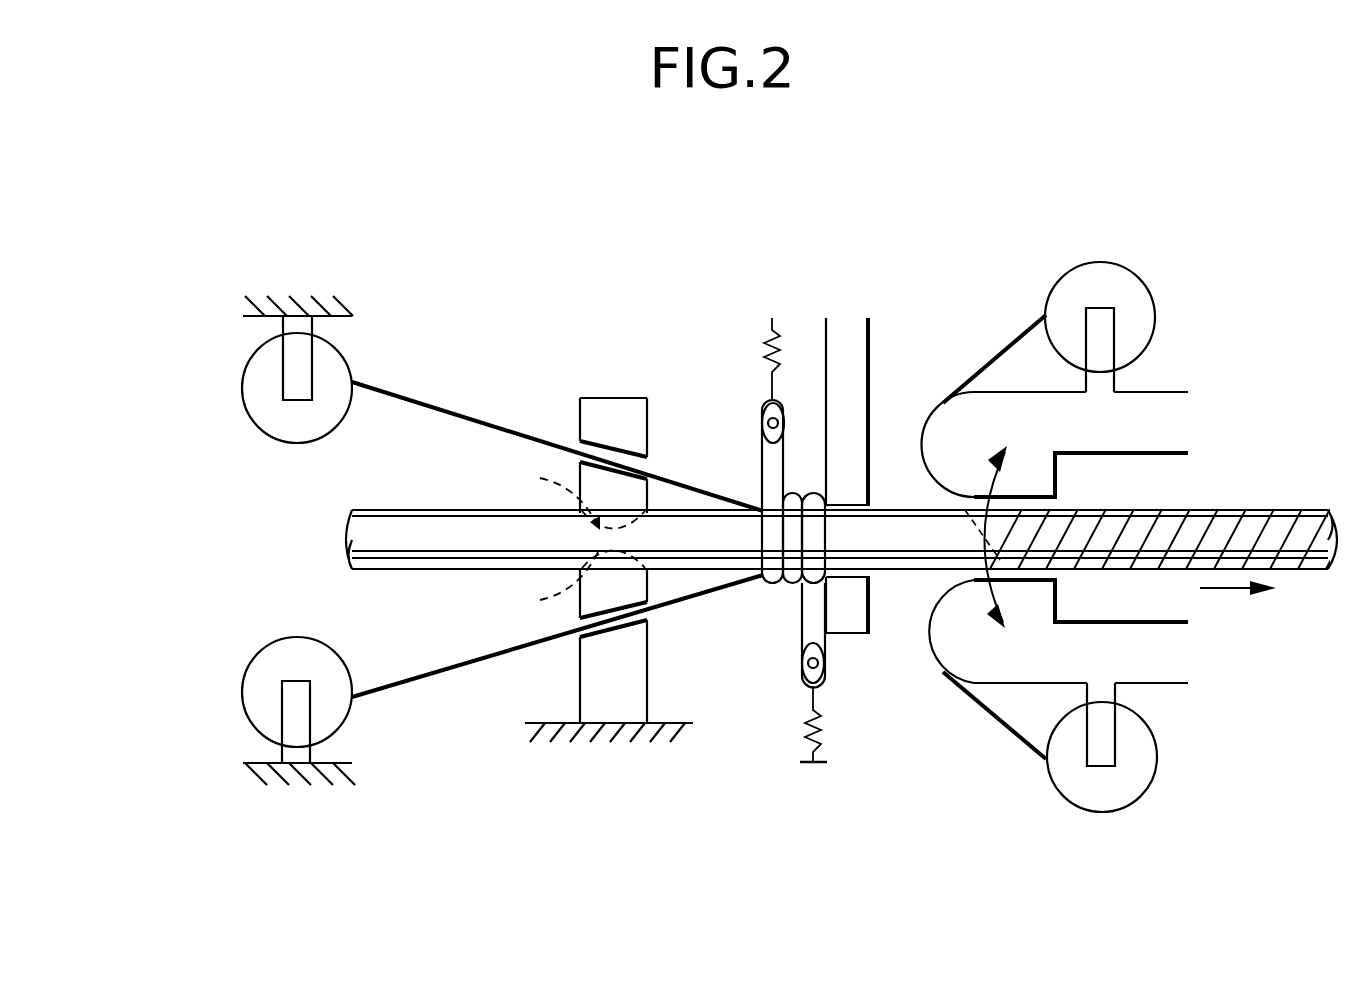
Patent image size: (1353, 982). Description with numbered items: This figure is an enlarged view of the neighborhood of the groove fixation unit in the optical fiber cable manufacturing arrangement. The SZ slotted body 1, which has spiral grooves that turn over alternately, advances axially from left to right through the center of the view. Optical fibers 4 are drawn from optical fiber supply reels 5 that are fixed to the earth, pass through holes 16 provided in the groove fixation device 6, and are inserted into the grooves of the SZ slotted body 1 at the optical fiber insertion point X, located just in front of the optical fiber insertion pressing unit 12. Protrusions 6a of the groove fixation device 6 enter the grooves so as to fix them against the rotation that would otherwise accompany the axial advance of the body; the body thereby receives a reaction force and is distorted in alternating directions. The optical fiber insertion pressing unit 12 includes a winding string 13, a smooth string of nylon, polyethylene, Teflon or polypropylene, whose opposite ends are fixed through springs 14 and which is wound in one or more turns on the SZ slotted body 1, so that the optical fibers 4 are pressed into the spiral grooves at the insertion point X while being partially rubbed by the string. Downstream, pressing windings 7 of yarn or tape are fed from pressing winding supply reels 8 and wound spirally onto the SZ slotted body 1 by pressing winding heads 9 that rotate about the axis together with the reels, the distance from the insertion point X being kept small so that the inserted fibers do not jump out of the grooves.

The SZ slotted body 1 is at (388, 508).
The optical fibers 4 is at (442, 402).
The optical fiber supply reel 5 is at (242, 392).
The groove fixation device 6 is at (618, 724).
The protrusions 6a is at (571, 537).
The pressing windings 7 is at (1003, 345).
The pressing winding supply reels 8 is at (1142, 270).
The pressing winding heads 9 is at (940, 655).
The optical fiber insertion pressing unit 12 is at (862, 833).
The winding string 13 is at (790, 588).
The springs 14 is at (808, 738).
The holes 16 is at (606, 456).
The optical fiber insertion point X is at (760, 505).